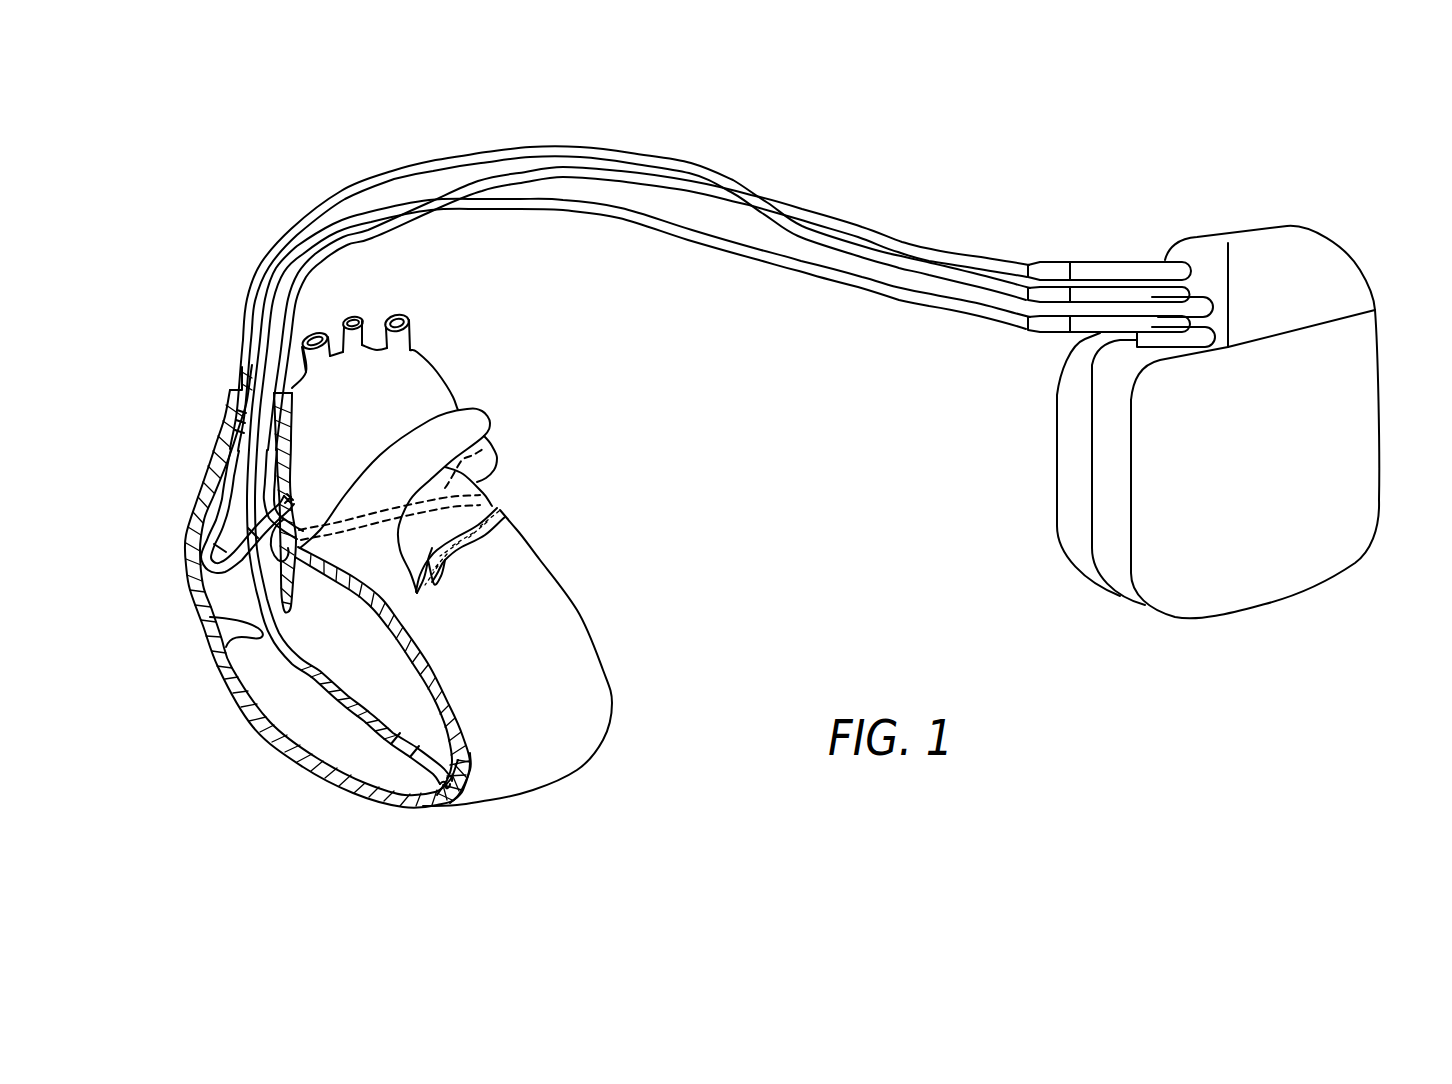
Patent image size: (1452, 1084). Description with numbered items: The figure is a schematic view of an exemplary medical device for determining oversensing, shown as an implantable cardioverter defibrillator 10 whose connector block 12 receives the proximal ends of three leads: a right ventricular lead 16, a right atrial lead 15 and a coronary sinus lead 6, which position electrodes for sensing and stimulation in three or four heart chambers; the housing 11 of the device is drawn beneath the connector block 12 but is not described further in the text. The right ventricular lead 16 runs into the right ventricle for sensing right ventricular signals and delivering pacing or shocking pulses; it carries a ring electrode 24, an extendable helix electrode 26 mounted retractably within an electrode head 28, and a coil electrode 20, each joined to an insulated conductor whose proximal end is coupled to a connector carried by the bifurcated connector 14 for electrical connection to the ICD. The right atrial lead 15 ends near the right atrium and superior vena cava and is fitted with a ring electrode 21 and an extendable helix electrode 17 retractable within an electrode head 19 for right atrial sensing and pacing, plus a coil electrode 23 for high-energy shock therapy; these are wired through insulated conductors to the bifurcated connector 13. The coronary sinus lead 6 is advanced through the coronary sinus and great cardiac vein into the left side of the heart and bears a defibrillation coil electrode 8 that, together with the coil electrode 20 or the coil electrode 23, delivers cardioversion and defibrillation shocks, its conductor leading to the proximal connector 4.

The proximal connector 4 is at (1107, 265).
The coronary sinus lead 6 is at (873, 240).
The defibrillation coil electrode 8 is at (500, 443).
The implantable cardioverter defibrillator 10 is at (1213, 419).
The housing 11 is at (1240, 572).
The connector block 12 is at (1247, 250).
The bifurcated connector 13 is at (1127, 297).
The bifurcated connector 14 is at (1085, 337).
The right atrial lead 15 is at (936, 277).
The right ventricular lead 16 is at (951, 320).
The extendable helix electrode 17 is at (288, 500).
The electrode head 19 is at (262, 502).
The coil electrode 20 is at (302, 670).
The ring electrode 21 is at (231, 473).
The coil electrode 23 is at (243, 415).
The ring electrode 24 is at (355, 662).
The extendable helix electrode 26 is at (447, 786).
The electrode head 28 is at (423, 760).